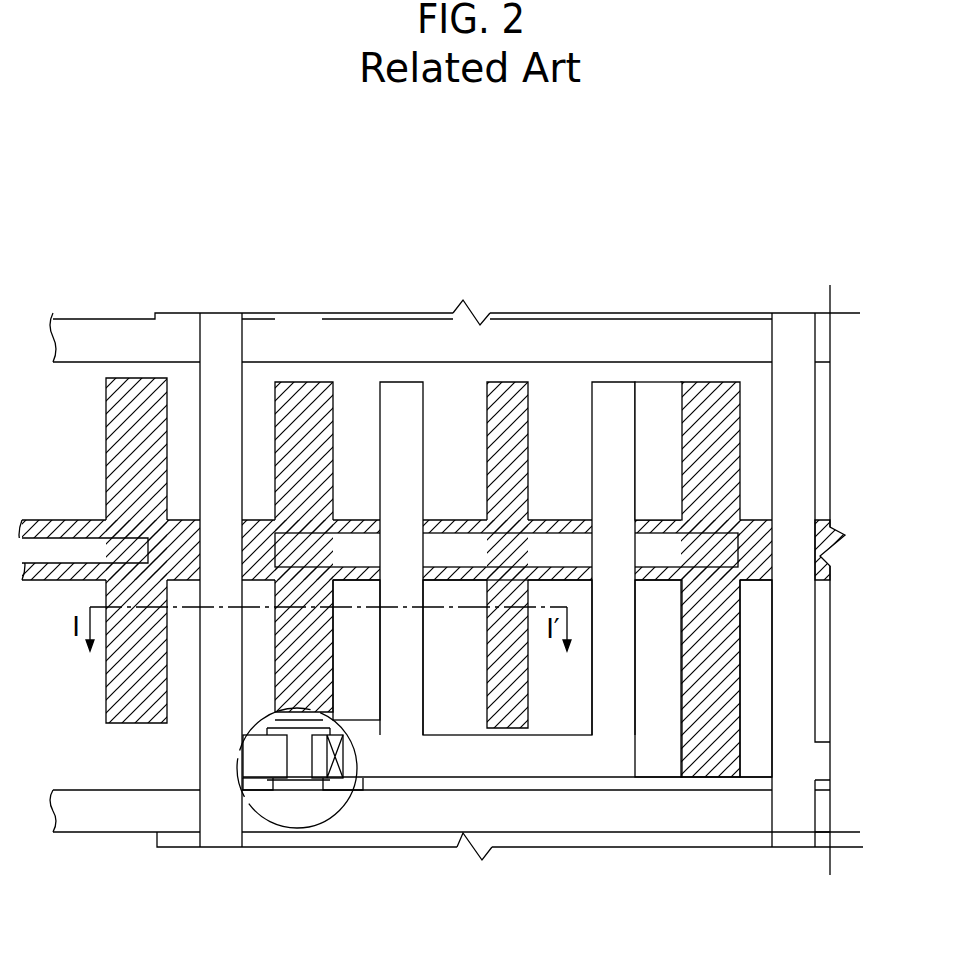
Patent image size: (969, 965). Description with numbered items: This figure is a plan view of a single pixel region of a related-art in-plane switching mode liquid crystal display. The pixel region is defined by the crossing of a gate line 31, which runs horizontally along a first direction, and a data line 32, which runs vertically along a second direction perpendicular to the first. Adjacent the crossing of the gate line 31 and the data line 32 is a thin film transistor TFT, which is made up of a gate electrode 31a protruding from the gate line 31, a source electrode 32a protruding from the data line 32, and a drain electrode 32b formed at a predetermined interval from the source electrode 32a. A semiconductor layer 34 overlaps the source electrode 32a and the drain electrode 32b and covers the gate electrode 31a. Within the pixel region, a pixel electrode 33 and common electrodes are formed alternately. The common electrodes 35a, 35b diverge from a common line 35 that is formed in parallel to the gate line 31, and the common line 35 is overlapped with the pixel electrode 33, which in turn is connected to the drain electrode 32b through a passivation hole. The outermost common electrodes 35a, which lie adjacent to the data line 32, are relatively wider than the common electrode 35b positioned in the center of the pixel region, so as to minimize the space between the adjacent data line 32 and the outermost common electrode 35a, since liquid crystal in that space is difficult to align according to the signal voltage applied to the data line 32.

The gate line 31 is at (570, 833).
The gate electrode 31a is at (275, 720).
The data line 32 is at (211, 436).
The source electrode 32a is at (256, 766).
The drain electrode 32b is at (318, 766).
The pixel electrode 33 is at (615, 393).
The semiconductor layer 34 is at (298, 757).
The common line 35 is at (830, 527).
The outermost common electrode 35a is at (298, 387).
The common electrode 35b is at (506, 387).
The thin film transistor TFT is at (305, 826).